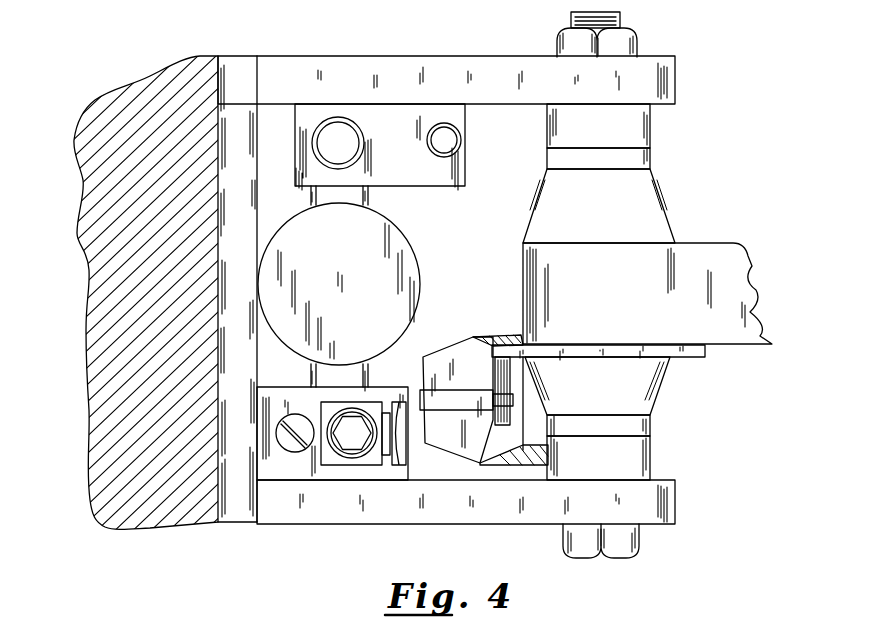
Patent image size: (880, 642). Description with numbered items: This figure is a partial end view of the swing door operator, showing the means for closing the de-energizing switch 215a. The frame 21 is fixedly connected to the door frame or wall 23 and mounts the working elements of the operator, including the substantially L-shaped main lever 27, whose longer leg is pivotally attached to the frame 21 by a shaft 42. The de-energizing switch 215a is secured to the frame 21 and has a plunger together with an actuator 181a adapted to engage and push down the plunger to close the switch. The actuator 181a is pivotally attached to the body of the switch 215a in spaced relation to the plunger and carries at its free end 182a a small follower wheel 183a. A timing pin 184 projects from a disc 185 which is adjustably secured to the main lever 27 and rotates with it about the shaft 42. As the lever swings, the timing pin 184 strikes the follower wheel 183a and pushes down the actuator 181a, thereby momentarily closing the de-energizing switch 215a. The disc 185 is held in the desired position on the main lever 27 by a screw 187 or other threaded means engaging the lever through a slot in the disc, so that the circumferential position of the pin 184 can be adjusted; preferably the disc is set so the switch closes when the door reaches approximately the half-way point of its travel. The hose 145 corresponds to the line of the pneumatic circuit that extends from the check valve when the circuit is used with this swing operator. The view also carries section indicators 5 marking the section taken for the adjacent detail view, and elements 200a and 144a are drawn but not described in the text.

The frame 21 is at (387, 56).
The door frame or wall 23 is at (83, 183).
The shaft 42 is at (650, 140).
The main lever 27 is at (700, 243).
The roller 200a is at (413, 252).
The de-energizing switch 215a is at (468, 337).
The timing pin 184 is at (494, 365).
The actuator 181a is at (462, 390).
The free end 182a is at (483, 455).
The follower wheel 183a is at (512, 425).
The screw 187 is at (625, 358).
The disc 185 is at (648, 358).
The hex bolt 144a is at (358, 460).
The hose 145 is at (398, 463).
The section line 5- 5 is at (541, 450).